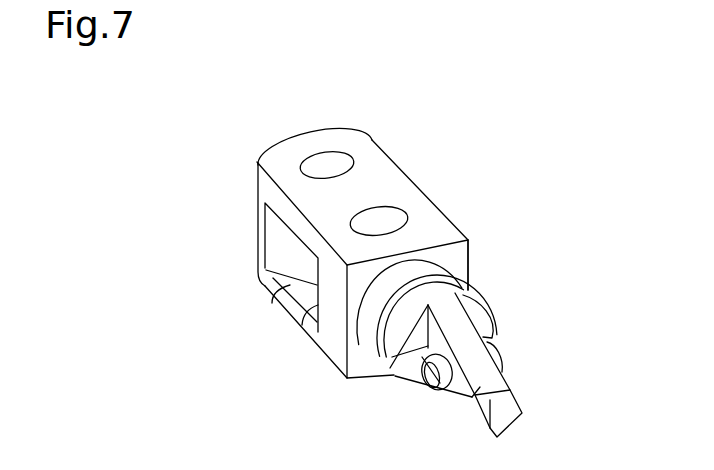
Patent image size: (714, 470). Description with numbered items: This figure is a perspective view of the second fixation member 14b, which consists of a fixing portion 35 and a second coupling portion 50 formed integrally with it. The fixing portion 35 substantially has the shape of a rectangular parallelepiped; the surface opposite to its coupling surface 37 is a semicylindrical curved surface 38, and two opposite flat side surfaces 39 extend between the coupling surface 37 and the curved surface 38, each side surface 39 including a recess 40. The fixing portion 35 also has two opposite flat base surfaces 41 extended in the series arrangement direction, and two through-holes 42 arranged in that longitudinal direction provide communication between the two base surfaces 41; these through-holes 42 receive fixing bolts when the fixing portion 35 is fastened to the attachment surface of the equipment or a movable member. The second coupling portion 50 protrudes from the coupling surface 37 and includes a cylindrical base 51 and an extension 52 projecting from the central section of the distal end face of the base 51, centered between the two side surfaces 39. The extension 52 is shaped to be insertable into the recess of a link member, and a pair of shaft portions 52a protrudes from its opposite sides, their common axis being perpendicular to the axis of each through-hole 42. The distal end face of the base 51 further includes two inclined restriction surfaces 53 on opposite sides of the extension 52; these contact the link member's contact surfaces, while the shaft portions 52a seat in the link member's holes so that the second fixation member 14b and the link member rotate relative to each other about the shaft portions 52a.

The second fixation member 14b is at (518, 146).
The fixing portion 35 is at (400, 152).
The coupling surface 37 is at (462, 250).
The curved surface 38 is at (280, 138).
The side surfaces 39 is at (421, 180).
The recess 40 is at (276, 303).
The base surfaces 41 is at (351, 139).
The through-holes 42 is at (326, 157).
The second coupling portion 50 is at (458, 296).
The cylindrical base 51 is at (457, 278).
The extension 52 is at (505, 392).
The shaft portions 52a is at (503, 360).
The inclined restriction surfaces 53 is at (492, 333).